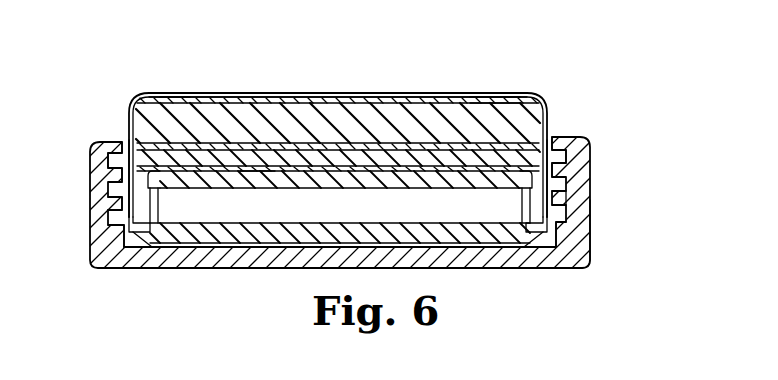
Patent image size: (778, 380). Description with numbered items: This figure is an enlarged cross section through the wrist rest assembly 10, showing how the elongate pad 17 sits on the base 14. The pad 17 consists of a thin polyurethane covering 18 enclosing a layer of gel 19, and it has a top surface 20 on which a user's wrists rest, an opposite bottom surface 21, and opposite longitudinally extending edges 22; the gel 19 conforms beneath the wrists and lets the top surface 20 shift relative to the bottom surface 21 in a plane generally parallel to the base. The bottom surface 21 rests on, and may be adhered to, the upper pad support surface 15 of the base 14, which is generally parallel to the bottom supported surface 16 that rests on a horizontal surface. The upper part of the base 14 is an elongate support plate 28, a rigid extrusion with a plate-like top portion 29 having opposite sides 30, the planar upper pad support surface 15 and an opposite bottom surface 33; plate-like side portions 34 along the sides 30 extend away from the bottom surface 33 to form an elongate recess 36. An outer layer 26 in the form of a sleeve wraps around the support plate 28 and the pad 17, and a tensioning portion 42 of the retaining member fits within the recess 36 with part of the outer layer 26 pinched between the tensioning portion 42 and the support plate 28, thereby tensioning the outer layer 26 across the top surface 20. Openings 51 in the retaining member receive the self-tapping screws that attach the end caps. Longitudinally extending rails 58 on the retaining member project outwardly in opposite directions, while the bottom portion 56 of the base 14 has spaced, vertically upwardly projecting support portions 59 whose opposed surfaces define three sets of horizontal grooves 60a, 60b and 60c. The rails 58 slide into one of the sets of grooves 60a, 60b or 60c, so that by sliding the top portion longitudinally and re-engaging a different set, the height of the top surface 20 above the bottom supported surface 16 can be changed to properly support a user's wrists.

The wrist rest assembly 10 is at (422, 63).
The base 14 is at (80, 245).
The upper pad support surface 15 is at (272, 146).
The bottom supported surface 16 is at (230, 266).
The pad 17 is at (175, 99).
The covering 18 is at (220, 93).
The layer of gel 19 is at (488, 128).
The top surface 20 is at (255, 97).
The bottom surface 21 is at (330, 163).
The edges 22 is at (133, 102).
The outer layer 26 is at (360, 95).
The support plate 28 is at (423, 163).
The top portion 29 is at (257, 160).
The sides 30 is at (132, 142).
The bottom surface 33 is at (503, 208).
The side portions 34 is at (110, 170).
The recess 36 is at (165, 197).
The tensioning portion 42 is at (294, 182).
The openings 51 is at (163, 246).
The bottom portion 56 is at (608, 246).
The rails 58 is at (119, 245).
The support portions 59 is at (100, 188).
The grooves 60a is at (100, 147).
The grooves 60b is at (108, 210).
The grooves 60c is at (100, 247).